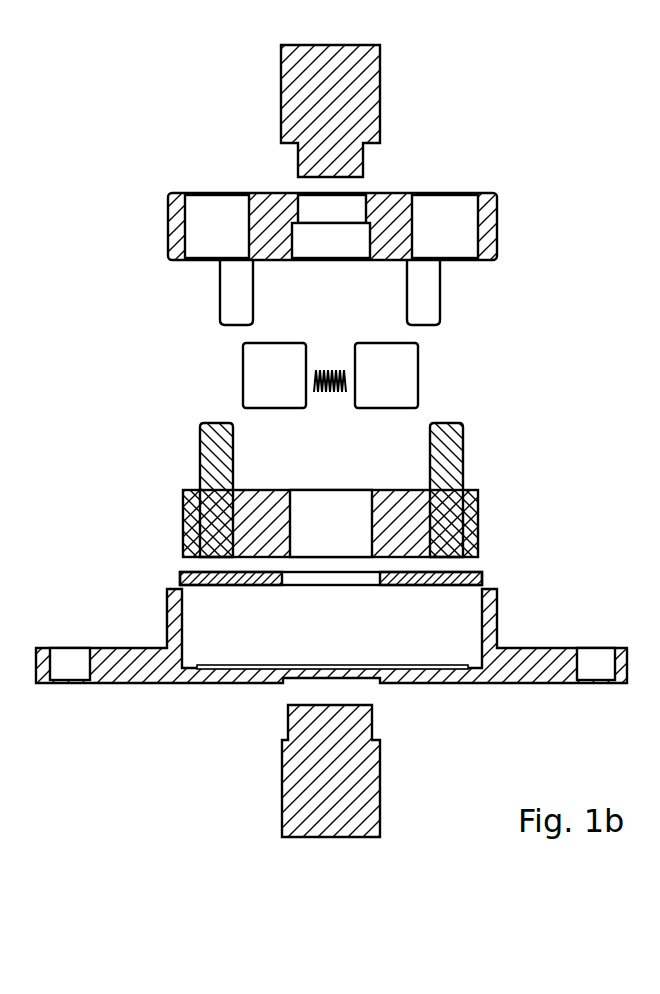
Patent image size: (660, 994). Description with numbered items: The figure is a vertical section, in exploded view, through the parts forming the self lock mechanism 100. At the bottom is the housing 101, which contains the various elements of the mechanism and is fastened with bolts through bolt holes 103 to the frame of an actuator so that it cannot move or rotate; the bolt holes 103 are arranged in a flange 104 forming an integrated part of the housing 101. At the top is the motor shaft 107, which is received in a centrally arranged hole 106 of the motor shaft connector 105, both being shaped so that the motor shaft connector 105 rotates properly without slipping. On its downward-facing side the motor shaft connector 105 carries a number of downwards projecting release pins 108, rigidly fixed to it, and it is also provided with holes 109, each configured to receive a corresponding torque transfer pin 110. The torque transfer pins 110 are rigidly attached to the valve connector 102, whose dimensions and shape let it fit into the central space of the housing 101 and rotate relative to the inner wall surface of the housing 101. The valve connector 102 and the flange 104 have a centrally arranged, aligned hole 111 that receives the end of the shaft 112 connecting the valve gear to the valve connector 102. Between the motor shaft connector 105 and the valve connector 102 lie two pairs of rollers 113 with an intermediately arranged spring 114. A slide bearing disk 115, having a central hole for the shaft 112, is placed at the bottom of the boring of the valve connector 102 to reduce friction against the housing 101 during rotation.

The self lock mechanism 100 is at (190, 715).
The housing 101 is at (167, 615).
The valve connector 102 is at (414, 495).
The bolt holes 103 is at (70, 658).
The flange 104 is at (339, 626).
The motor shaft connector 105 is at (369, 224).
The centrally arranged hole 106 is at (332, 240).
The motor shaft 107 is at (363, 80).
The release pins 108 is at (238, 298).
The holes 109 is at (217, 213).
The torque transfer pins 110 is at (215, 447).
The centrally arranged aligned hole 111 is at (325, 520).
The shaft 112 is at (345, 732).
The rollers 113 is at (262, 372).
The spring 114 is at (330, 392).
The slide bearing disk 115 is at (477, 575).